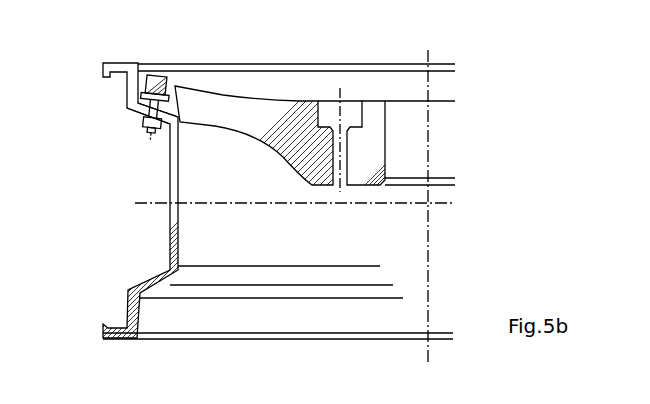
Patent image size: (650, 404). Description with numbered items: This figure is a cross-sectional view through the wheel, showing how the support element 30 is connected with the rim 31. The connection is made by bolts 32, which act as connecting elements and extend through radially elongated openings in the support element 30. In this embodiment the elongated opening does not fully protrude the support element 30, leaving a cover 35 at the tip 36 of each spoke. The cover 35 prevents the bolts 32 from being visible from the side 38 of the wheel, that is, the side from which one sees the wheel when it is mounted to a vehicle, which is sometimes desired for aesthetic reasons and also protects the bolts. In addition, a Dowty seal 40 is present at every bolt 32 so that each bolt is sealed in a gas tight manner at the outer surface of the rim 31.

The hub body 30 is at (230, 116).
The rim well / rim wall 31 is at (170, 220).
The conical rim section 32 is at (140, 110).
The bolt head 35 is at (167, 76).
The washer plate 36 is at (152, 73).
The wheel assembly 38 is at (275, 51).
The nut 40 is at (146, 125).